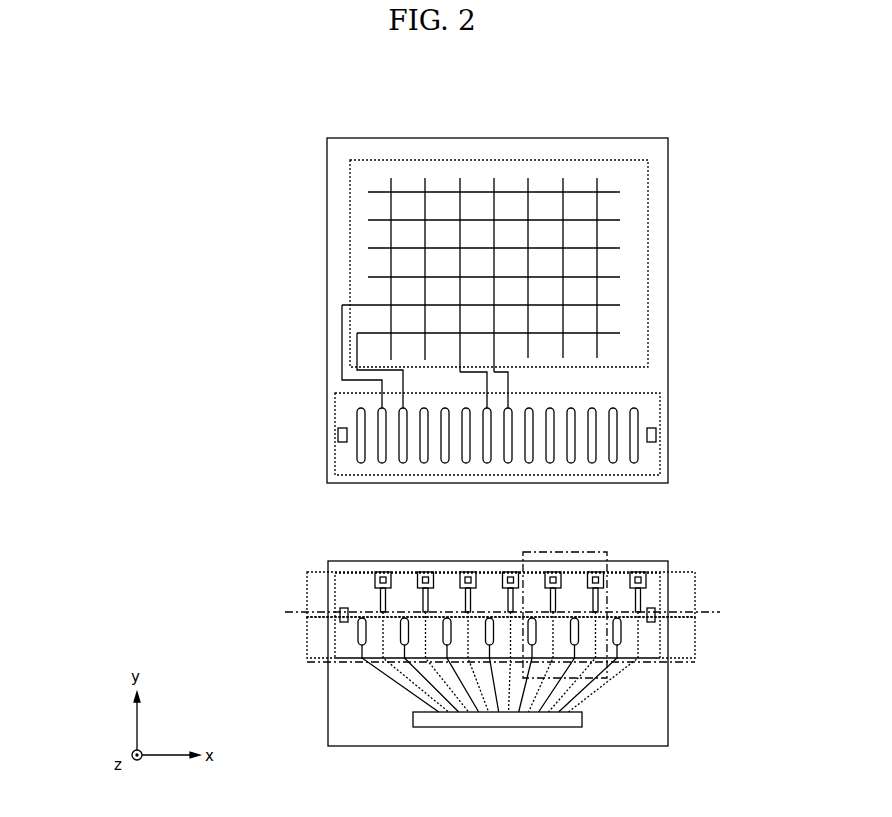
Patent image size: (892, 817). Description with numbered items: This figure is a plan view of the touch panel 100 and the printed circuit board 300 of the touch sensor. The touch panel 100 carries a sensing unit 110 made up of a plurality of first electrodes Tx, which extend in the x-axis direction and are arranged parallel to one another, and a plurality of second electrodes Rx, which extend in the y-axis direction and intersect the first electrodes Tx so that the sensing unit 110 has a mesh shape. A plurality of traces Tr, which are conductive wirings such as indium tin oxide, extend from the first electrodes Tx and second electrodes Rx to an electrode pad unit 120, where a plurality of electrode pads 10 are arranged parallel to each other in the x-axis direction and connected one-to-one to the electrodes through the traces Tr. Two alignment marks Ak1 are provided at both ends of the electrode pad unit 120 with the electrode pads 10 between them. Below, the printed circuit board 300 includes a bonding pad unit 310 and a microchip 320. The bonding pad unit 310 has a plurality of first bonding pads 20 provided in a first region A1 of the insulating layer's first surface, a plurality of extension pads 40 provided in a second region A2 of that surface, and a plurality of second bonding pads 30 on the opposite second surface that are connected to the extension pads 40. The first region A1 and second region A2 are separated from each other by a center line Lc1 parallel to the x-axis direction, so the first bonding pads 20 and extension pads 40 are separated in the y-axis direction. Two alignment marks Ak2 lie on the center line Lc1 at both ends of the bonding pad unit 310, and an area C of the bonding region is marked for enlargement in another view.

The touch panel 100 is at (668, 270).
The sensing unit 110 is at (648, 225).
The first electrodes Tx is at (610, 192).
The second electrodes Rx is at (597, 347).
The traces Tr is at (342, 345).
The electrode pad unit 120 is at (655, 436).
The electrode pads 10 is at (591, 463).
The alignment marks Ak1 is at (338, 436).
The printed circuit board 300 is at (668, 688).
The second region A2 is at (695, 590).
The first region A1 is at (695, 636).
The center line Lc1 is at (298, 613).
The bonding pad unit 310 is at (638, 572).
The extension pads 40 is at (470, 597).
The first bonding pads 20 is at (405, 608).
The second bonding pads 30 is at (447, 608).
The area C is at (565, 552).
The microchip 320 is at (413, 718).
The alignment marks Ak2 is at (651, 623).